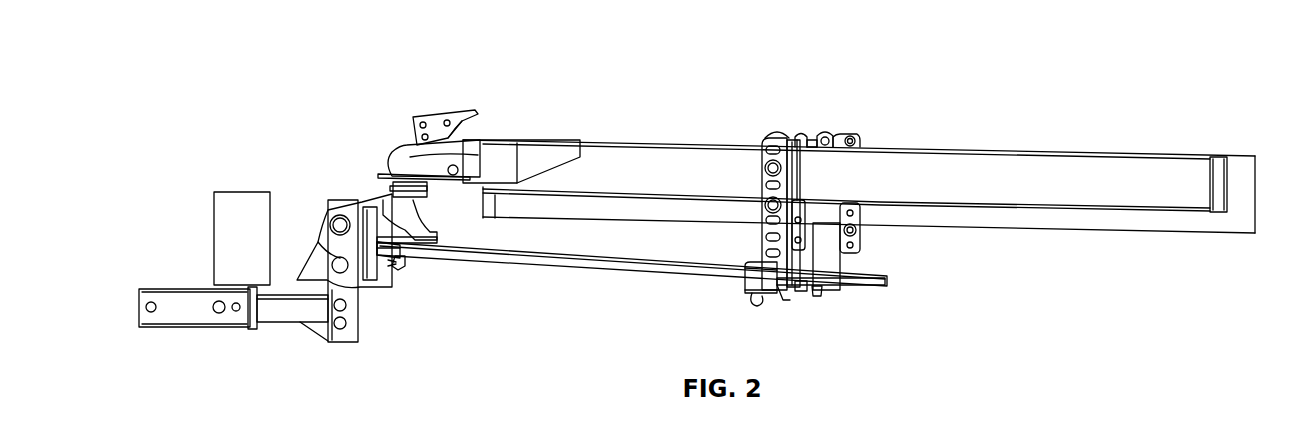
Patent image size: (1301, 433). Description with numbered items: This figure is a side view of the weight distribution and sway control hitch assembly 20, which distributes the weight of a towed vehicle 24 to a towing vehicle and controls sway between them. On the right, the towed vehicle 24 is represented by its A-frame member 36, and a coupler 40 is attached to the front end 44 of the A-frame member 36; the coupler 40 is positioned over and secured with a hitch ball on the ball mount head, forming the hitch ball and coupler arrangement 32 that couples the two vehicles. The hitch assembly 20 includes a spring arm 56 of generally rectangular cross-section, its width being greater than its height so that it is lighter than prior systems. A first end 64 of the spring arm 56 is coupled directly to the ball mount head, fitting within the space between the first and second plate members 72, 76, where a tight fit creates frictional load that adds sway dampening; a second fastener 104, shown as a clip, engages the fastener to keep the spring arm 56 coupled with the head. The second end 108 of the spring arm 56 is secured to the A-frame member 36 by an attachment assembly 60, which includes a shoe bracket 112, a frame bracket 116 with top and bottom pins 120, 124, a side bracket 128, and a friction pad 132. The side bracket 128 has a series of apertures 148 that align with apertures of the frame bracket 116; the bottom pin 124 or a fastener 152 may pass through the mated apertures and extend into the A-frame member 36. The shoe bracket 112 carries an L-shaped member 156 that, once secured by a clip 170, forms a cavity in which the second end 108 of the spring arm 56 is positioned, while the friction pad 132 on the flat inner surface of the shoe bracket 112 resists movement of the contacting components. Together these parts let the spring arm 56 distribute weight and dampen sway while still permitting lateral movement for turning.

The hitch assembly 20 is at (871, 187).
The towed vehicle 24 is at (1250, 188).
The hitch ball and coupler arrangement 32 is at (355, 148).
The A-frame member 36 is at (990, 185).
The coupler 40 is at (488, 134).
The front end 44 is at (550, 182).
The spring arm 56 is at (497, 256).
The attachment assembly 60 is at (765, 114).
The first end 64 is at (410, 250).
The first plate member 72 is at (433, 237).
The second plate member 76 is at (405, 268).
The second fastener 104 is at (385, 283).
The second end 108 is at (812, 288).
The shoe bracket 112 is at (802, 290).
The frame bracket 116 is at (783, 137).
The top pin 120 is at (797, 140).
The bottom pin 124 is at (864, 233).
The side bracket 128 is at (762, 182).
The friction pad 132 is at (780, 294).
The apertures 148 is at (770, 219).
The fastener 152 is at (768, 167).
The L-shaped member 156 is at (747, 283).
The clip 170 is at (753, 302).